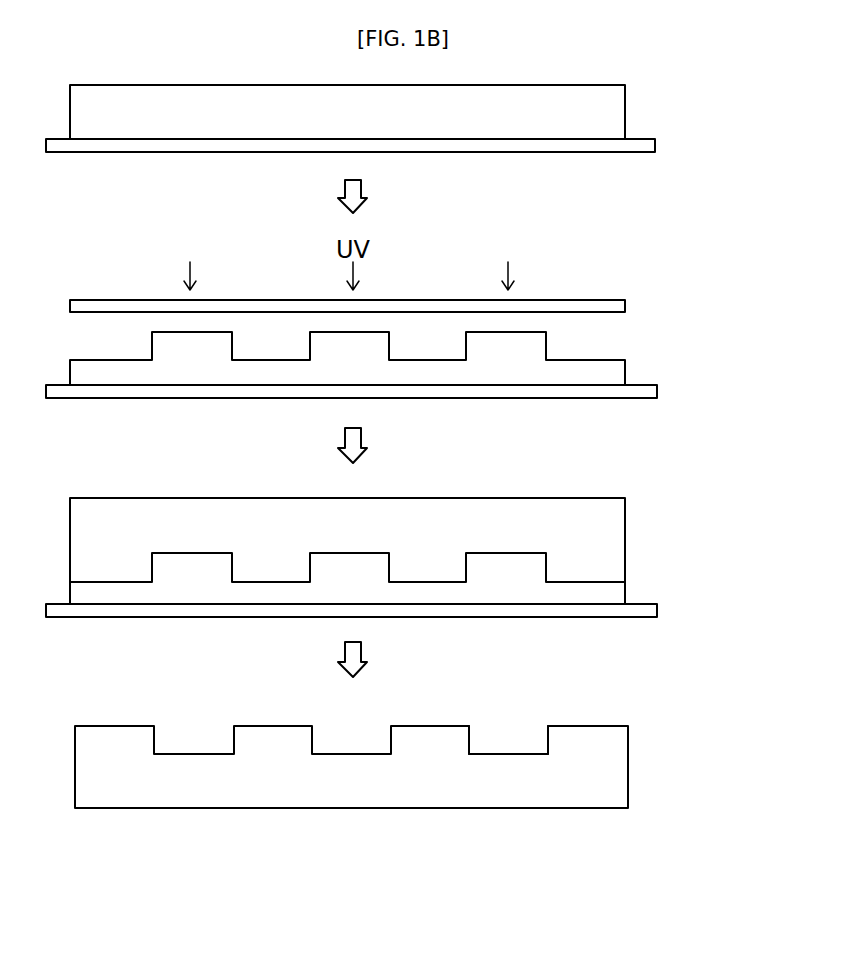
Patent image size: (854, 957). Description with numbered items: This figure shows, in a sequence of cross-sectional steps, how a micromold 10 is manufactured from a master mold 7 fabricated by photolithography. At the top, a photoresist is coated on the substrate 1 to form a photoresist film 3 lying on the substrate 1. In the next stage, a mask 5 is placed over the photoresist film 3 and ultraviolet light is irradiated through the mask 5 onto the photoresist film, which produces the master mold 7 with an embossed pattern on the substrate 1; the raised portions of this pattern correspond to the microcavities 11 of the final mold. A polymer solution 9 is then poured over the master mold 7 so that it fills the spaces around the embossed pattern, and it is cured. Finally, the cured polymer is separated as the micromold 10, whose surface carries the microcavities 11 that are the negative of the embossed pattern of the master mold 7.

The substrate 1 is at (655, 143).
The photoresist film 3 is at (625, 100).
The mask 5 is at (625, 305).
The master mold 7 is at (625, 362).
The polymer solution 9 is at (625, 525).
The micromold 10 is at (628, 763).
The microcavities 11 is at (525, 746).